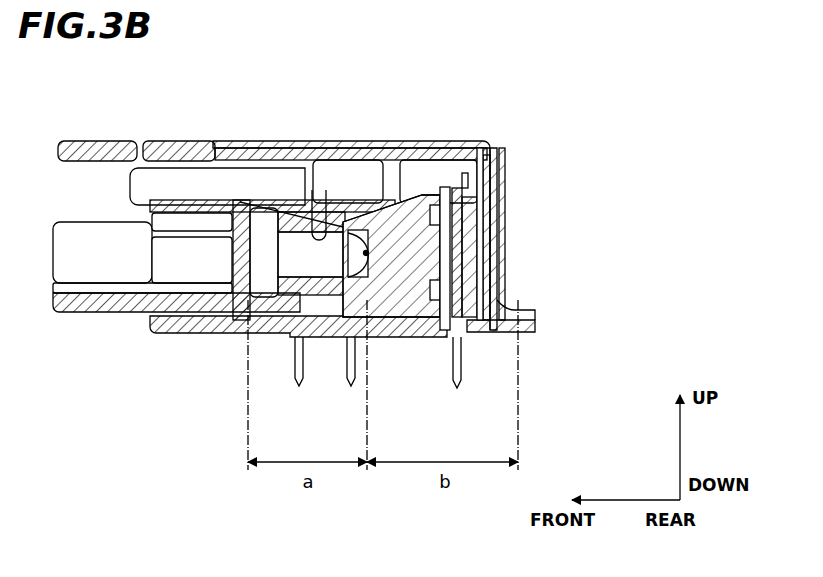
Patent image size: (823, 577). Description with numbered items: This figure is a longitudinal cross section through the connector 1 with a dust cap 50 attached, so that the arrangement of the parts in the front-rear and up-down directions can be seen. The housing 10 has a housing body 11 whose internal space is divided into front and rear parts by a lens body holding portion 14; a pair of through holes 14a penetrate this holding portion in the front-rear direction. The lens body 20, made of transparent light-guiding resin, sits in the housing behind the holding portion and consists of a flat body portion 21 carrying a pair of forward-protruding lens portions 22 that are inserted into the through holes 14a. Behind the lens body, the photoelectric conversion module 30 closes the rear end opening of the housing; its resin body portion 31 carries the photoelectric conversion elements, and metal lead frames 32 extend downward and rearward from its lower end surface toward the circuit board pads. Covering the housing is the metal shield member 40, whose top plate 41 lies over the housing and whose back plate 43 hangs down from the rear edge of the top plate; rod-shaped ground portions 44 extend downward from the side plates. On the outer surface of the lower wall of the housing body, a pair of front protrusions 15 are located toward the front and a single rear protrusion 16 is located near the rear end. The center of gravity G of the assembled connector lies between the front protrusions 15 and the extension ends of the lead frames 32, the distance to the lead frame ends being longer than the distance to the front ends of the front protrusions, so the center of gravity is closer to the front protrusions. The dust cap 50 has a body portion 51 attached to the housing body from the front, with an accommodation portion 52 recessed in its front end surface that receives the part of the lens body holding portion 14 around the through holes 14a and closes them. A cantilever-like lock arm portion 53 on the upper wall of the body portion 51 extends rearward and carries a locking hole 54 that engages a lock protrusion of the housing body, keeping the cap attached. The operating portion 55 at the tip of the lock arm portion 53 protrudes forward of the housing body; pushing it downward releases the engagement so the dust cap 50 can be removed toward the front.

The connector 1 is at (505, 112).
The housing 10 is at (215, 346).
The housing body 11 is at (178, 336).
The lens body holding portion 14 is at (330, 224).
The through holes 14a is at (320, 235).
The front protrusions 15 is at (262, 336).
The rear protrusion 16 is at (430, 340).
The lens body 20 is at (455, 74).
The body portion 21 is at (441, 186).
The lens portions 22 is at (397, 197).
The photoelectric conversion module 30 is at (490, 232).
The body portion 31 is at (470, 219).
The lead frames 32 is at (484, 340).
The shield member 40 is at (462, 143).
The top plate 41 is at (356, 142).
The back plate 43 is at (506, 160).
The ground portions 44 is at (299, 388).
The dust cap 50 is at (66, 328).
The body portion 51 is at (108, 312).
The accommodation portion 52 is at (298, 198).
The lock arm portion 53 is at (141, 150).
The locking hole 54 is at (203, 150).
The operating portion 55 is at (82, 150).
The center of gravity G is at (368, 253).